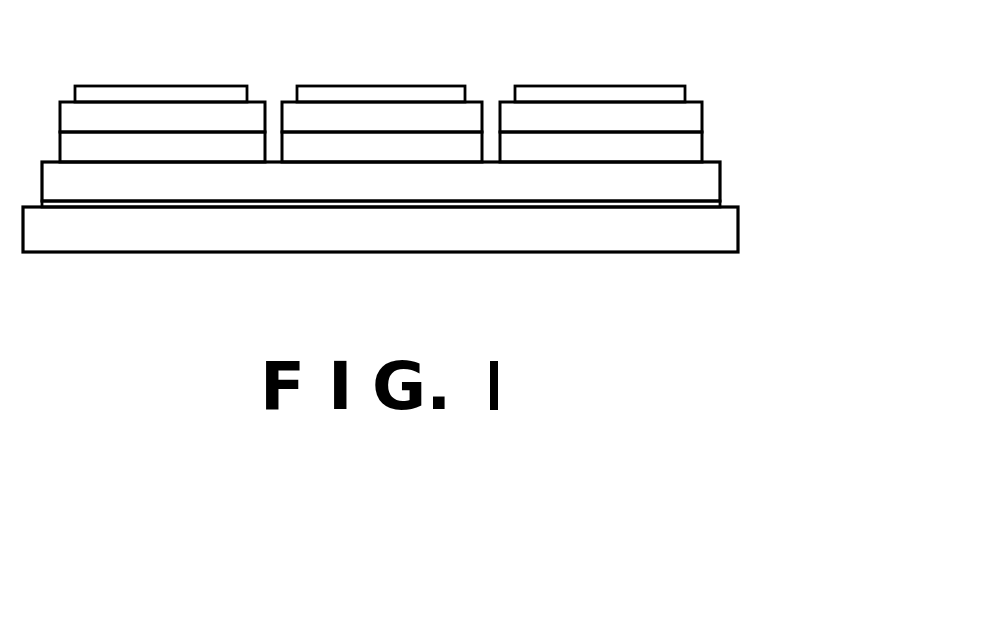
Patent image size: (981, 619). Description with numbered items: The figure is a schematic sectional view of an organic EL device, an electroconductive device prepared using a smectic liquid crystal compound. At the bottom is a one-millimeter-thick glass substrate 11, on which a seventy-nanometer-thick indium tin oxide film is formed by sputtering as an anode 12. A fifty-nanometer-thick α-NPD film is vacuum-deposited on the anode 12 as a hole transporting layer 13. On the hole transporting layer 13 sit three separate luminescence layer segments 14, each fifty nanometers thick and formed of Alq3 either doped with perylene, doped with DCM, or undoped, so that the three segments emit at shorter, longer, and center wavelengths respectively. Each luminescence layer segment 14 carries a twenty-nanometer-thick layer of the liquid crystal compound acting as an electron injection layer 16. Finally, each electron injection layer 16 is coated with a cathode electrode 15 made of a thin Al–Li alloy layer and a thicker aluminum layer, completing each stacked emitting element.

The glass substrate 11 is at (717, 237).
The anode (ITO electrode) 12 is at (712, 207).
The hole transporting layer 13 is at (702, 188).
The luminescence layer segments 14 is at (693, 152).
The cathode electrode 15 is at (168, 95).
The electron injection layer 16 is at (693, 120).